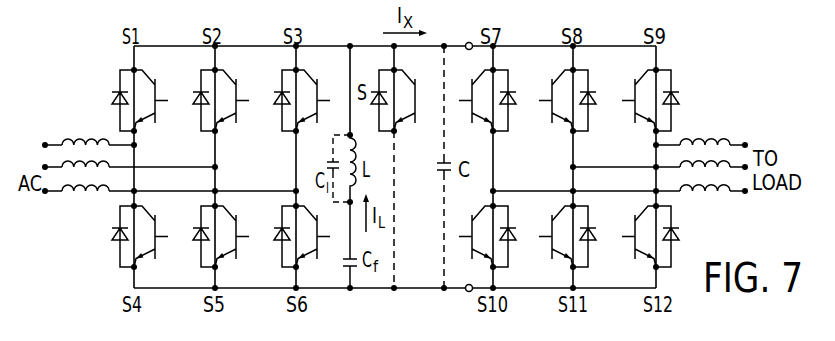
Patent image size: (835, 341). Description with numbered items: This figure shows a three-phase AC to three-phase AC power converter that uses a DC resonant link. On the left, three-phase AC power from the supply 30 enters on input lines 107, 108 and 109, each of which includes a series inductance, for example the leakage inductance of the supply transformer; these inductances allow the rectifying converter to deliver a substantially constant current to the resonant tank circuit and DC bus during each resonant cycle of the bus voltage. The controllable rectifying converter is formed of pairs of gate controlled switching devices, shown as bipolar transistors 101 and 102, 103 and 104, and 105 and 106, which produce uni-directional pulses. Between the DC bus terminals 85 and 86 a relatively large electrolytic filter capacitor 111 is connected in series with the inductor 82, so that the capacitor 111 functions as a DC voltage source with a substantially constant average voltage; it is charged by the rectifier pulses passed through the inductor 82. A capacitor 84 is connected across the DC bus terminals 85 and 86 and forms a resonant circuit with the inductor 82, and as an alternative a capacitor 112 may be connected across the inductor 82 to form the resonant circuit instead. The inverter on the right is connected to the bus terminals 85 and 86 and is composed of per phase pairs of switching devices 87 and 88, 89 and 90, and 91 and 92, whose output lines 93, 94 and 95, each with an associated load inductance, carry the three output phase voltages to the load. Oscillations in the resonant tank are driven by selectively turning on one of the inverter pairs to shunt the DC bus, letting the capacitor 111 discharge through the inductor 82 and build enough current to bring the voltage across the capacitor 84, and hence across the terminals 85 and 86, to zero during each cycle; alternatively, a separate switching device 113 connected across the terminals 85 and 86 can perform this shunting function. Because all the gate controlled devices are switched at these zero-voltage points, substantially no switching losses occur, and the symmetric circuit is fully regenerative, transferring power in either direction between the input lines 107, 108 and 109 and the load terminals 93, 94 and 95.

The three-phase AC input terminals 30 is at (33, 168).
The inductor 82 is at (359, 152).
The capacitor 84 is at (441, 173).
The DC bus terminal 85 is at (467, 43).
The DC bus terminal 86 is at (467, 293).
The switching device 87 is at (482, 123).
The switching device 88 is at (480, 219).
The switching device 89 is at (567, 122).
The switching device 90 is at (565, 257).
The switching device 91 is at (643, 123).
The switching device 92 is at (633, 257).
The output line 93 is at (692, 133).
The output line 94 is at (728, 158).
The output line 95 is at (720, 193).
The gate controlled switching device 101 is at (145, 121).
The gate controlled switching device 102 is at (145, 256).
The gate controlled switching device 103 is at (226, 121).
The gate controlled switching device 104 is at (226, 256).
The gate controlled switching device 105 is at (308, 83).
The gate controlled switching device 106 is at (309, 253).
The input line 107 is at (98, 136).
The input line 108 is at (62, 165).
The input line 109 is at (72, 186).
The filter capacitor 111 is at (355, 268).
The capacitor 112 is at (331, 161).
The switching device 113 is at (403, 124).